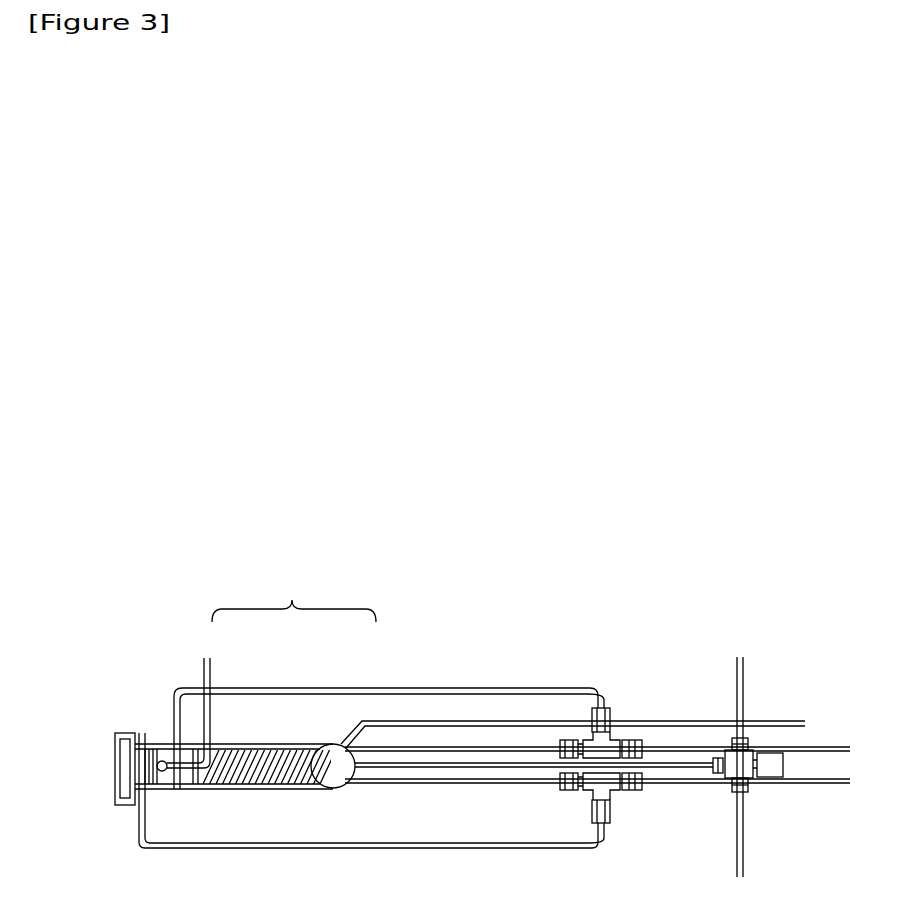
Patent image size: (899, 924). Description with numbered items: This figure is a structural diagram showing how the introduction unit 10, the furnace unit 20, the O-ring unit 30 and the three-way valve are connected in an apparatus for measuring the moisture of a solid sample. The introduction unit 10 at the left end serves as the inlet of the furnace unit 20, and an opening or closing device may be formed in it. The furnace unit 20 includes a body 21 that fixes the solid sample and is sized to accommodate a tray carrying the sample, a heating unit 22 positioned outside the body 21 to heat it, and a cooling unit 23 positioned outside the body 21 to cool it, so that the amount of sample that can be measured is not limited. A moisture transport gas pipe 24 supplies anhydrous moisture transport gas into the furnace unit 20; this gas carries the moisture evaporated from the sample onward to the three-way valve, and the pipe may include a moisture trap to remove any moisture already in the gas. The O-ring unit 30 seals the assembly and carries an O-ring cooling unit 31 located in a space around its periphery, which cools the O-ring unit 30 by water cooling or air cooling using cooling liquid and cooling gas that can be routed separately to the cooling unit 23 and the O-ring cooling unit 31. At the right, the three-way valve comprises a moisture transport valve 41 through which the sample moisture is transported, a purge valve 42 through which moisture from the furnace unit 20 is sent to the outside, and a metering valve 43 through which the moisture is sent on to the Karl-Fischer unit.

The introduction unit 10 is at (117, 740).
The furnace unit 20 is at (294, 596).
The body 21 is at (342, 762).
The heating unit 22 is at (248, 742).
The cooling unit 23 is at (308, 742).
The moisture transport gas pipe 24 is at (207, 658).
The O-ring unit 30 is at (123, 733).
The O-ring cooling unit 31 is at (172, 746).
The moisture transport valve 41 is at (720, 773).
The purge valve 42 is at (753, 749).
The metering valve 43 is at (753, 792).